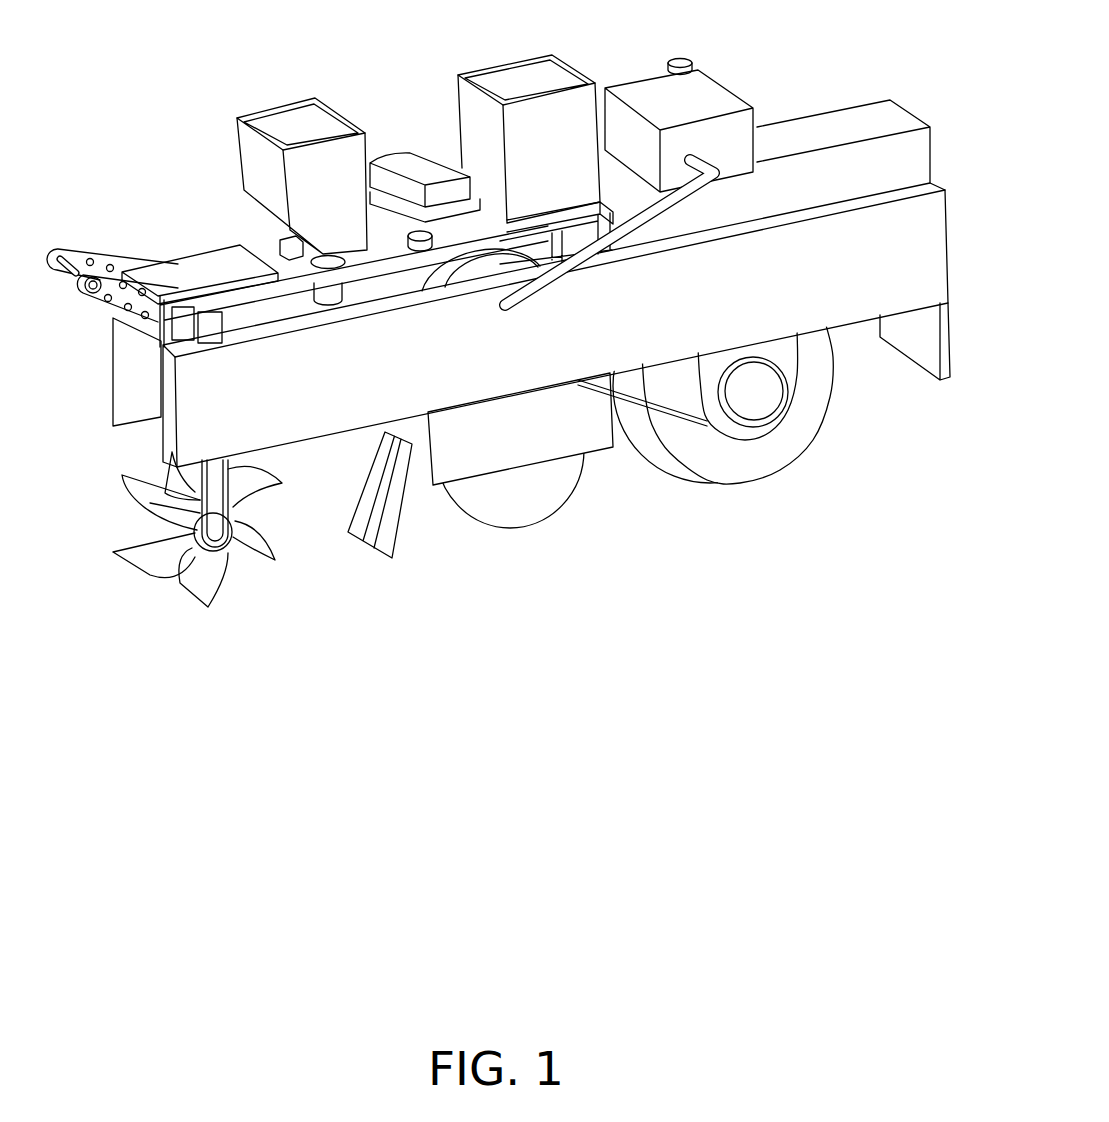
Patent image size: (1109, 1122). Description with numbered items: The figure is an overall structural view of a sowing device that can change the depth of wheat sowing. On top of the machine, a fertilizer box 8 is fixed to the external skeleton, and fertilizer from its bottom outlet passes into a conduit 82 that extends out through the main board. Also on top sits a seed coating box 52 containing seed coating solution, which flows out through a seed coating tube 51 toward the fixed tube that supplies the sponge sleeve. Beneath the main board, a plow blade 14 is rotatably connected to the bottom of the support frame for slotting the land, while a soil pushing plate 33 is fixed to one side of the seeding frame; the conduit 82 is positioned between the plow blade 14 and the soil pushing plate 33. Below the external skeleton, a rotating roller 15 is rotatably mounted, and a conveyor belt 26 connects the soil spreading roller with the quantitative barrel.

The fertilizer box 8 is at (288, 132).
The seed coating box 52 is at (690, 102).
The seed coating tube 51 is at (658, 220).
The conduit 82 is at (330, 297).
The conveyor belt 26 is at (627, 406).
The rotating roller 15 is at (752, 392).
The soil pushing plate 33 is at (382, 527).
The plow blade 14 is at (182, 550).